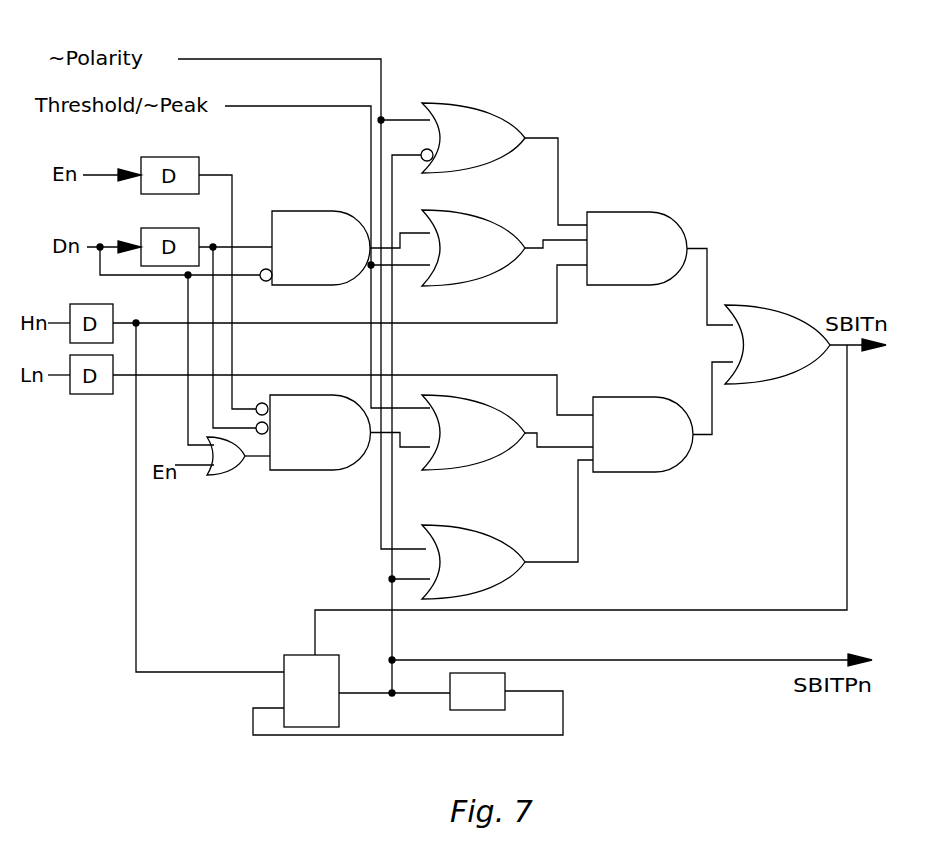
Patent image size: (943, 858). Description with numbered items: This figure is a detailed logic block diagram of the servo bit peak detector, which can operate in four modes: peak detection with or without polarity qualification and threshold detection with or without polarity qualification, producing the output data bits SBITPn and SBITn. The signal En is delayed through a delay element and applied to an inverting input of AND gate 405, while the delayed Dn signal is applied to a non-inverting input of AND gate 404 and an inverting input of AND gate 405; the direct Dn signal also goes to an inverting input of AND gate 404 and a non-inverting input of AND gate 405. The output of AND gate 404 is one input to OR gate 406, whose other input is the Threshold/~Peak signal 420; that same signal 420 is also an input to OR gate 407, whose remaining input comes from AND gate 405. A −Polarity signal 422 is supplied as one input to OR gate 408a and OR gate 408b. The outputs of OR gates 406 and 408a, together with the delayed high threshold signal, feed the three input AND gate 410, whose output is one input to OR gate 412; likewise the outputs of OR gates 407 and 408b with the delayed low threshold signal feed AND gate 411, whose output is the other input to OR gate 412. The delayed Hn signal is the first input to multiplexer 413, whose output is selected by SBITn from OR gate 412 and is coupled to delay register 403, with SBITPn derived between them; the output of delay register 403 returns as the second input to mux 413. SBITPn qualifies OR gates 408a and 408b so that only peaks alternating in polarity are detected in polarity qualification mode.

The delay register 403 is at (459, 697).
The AND gate 404 is at (296, 219).
The AND gate 405 is at (307, 470).
The OR gate 406 is at (473, 219).
The OR gate 407 is at (477, 466).
The OR gate 408a is at (480, 114).
The OR gate 408b is at (490, 541).
The three input AND gate 410 is at (639, 222).
The AND gate 411 is at (642, 405).
The OR gate 412 is at (766, 318).
The multiplexer 413 is at (323, 658).
The Threshold/~Peak signal 420 is at (266, 104).
The −Polarity signal 422 is at (333, 57).